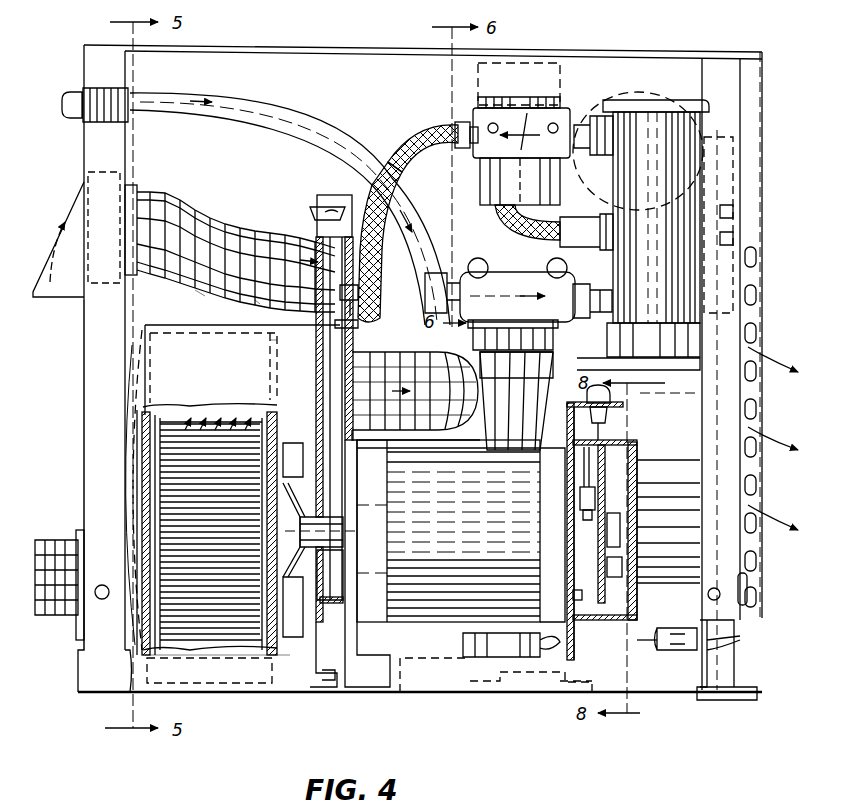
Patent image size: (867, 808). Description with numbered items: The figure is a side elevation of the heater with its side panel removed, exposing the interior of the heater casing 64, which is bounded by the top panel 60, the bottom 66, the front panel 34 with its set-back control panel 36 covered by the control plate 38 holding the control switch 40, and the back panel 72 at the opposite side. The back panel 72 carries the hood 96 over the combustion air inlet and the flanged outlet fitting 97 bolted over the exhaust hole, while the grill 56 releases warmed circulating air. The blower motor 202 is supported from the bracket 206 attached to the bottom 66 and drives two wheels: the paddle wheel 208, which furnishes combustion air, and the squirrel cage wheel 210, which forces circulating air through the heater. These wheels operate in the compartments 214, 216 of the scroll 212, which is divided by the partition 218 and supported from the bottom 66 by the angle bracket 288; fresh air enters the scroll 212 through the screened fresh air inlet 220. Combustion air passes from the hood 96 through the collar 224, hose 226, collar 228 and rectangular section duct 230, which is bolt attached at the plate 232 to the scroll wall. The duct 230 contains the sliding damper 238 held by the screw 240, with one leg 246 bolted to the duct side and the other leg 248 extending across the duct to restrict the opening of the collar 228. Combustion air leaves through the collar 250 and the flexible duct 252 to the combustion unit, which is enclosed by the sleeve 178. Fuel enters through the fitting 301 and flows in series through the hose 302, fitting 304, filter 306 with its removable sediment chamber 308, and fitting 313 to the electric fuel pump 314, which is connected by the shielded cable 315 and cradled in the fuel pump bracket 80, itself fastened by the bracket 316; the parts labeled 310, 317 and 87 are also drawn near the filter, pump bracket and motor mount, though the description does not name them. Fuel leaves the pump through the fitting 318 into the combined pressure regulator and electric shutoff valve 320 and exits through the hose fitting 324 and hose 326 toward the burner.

The fitting 301 is at (70, 97).
The hose 302 is at (216, 98).
The top panel 60 is at (260, 46).
The heater casing 64 is at (607, 48).
The fitting 318 is at (598, 122).
The fuel pump bracket 80 is at (735, 135).
The combined pressure regulator and electric shutoff valve 320 is at (470, 125).
The hose 326 is at (412, 158).
The hose fitting 324 is at (458, 146).
The front panel 34 is at (740, 183).
The collar 224 is at (138, 192).
The rectangular section duct 230 is at (330, 195).
The sliding damper 238 is at (318, 215).
The clamp 317 is at (745, 213).
The bracket 316 is at (745, 238).
The hood 96 is at (62, 242).
The leg 248 is at (292, 266).
The fitting 304 is at (360, 262).
The shielded cable 315 is at (516, 230).
The valve body 310 is at (548, 262).
The electric fuel pump 314 is at (608, 254).
The fitting 313 is at (603, 292).
The grill 56 is at (760, 302).
The hose 226 is at (198, 298).
The collar 228 is at (256, 310).
The screw 240 is at (360, 300).
The leg 246 is at (358, 325).
The filter 306 is at (553, 338).
The scroll 212 is at (165, 352).
The partition 218 is at (272, 357).
The collar 250 is at (372, 370).
The squirrel cage wheel 210 is at (178, 420).
The compartment 214 is at (197, 420).
The compartment 216 is at (286, 418).
The back panel 72 is at (88, 426).
The plate 232 is at (265, 447).
The flexible duct 252 is at (405, 432).
The sediment chamber 308 is at (525, 455).
The fresh air inlet 220 is at (137, 488).
The sleeve 178 is at (648, 580).
The blower motor 202 is at (436, 612).
The bracket 206 is at (578, 624).
The control panel 36 is at (715, 660).
The paddle wheel 208 is at (270, 656).
The motor mount 87 is at (480, 648).
The control switch 40 is at (672, 650).
The control plate 38 is at (708, 680).
The flanged outlet fitting 97 is at (60, 612).
The angle bracket 288 is at (315, 690).
The bottom 66 is at (440, 695).